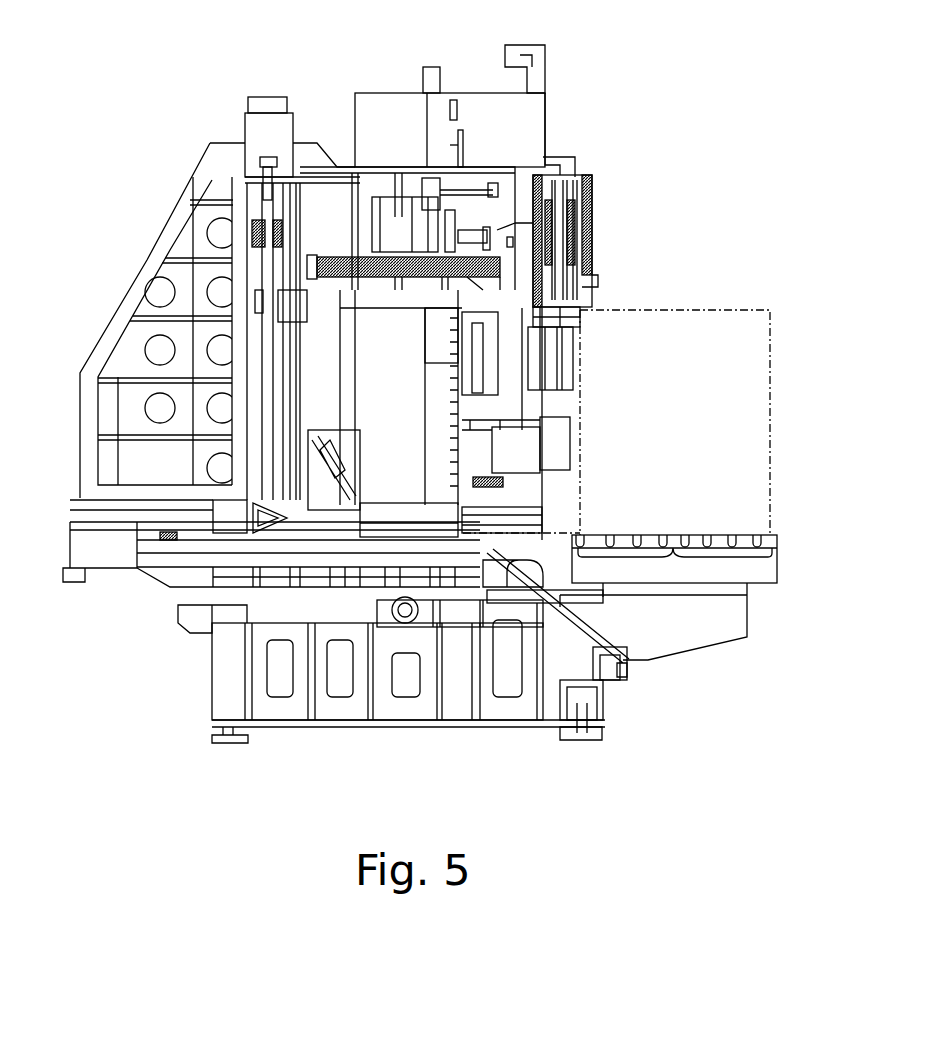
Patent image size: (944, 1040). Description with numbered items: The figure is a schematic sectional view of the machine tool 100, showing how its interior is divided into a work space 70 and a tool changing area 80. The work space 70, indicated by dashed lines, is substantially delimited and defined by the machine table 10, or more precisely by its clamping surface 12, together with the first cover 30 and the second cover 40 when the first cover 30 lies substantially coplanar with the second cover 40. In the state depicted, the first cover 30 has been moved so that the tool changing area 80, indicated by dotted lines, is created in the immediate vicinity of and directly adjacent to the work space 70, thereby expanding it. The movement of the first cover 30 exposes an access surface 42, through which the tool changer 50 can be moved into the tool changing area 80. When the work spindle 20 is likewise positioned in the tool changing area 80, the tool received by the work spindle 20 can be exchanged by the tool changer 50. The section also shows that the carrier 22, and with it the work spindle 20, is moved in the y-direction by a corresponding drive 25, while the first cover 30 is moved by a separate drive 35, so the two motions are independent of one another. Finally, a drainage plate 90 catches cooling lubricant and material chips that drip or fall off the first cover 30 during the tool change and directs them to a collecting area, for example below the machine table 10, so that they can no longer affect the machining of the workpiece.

The machine tool 100 is at (163, 136).
The machine table 10 is at (788, 569).
The clamping surface 12 is at (747, 535).
The work spindle 20 is at (600, 199).
The carrier 22 is at (410, 165).
The drive 25 is at (111, 590).
The first cover 30 is at (457, 395).
The drive 35 is at (426, 513).
The second cover 40 is at (545, 118).
The access surface 42 is at (507, 360).
The tool changer 50 is at (592, 440).
The work space 70 is at (663, 557).
The tool changing area 80 is at (486, 556).
The drainage plate 90 is at (505, 570).